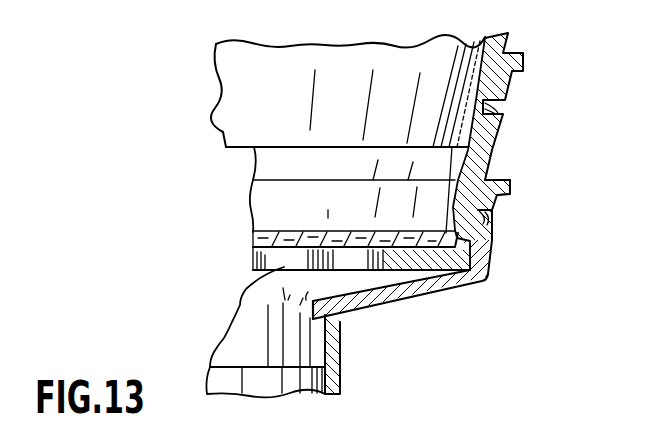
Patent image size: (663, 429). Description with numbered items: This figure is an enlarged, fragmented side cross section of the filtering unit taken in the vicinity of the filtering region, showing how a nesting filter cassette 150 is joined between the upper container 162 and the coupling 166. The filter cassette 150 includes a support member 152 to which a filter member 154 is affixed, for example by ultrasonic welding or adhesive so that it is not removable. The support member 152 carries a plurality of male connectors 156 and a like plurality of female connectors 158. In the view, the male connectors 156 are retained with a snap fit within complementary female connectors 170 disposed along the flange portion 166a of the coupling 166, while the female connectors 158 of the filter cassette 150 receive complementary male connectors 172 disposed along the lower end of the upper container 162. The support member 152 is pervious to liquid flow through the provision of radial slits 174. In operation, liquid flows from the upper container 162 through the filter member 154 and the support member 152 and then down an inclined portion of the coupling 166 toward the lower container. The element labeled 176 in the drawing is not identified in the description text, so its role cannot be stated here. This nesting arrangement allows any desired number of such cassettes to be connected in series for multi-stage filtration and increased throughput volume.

The filter cassette 150 is at (247, 204).
The support member 152 is at (492, 149).
The filter member 154 is at (277, 232).
The male connectors 156 is at (482, 223).
The female connectors 158 is at (490, 117).
The upper container 162 is at (291, 53).
The coupling 166 is at (342, 378).
The flange portion 166a is at (488, 262).
The female connectors 170 is at (492, 212).
The male connectors 172 is at (503, 114).
The radial slits 174 is at (243, 295).
The bottom strip 176 is at (388, 303).